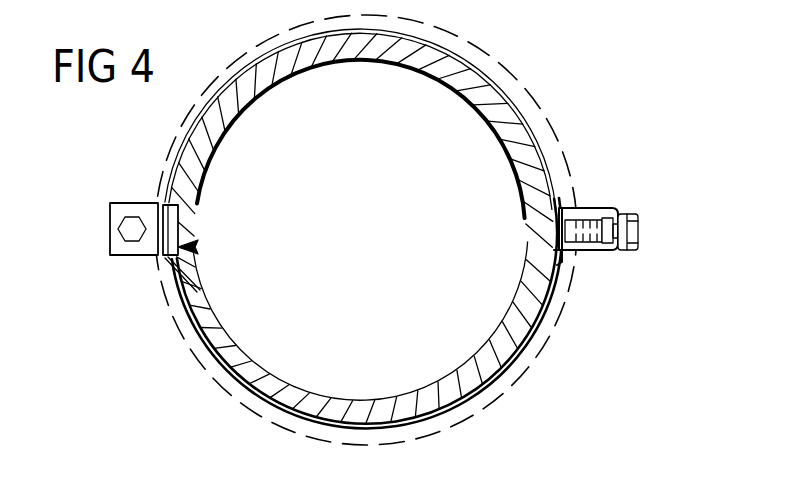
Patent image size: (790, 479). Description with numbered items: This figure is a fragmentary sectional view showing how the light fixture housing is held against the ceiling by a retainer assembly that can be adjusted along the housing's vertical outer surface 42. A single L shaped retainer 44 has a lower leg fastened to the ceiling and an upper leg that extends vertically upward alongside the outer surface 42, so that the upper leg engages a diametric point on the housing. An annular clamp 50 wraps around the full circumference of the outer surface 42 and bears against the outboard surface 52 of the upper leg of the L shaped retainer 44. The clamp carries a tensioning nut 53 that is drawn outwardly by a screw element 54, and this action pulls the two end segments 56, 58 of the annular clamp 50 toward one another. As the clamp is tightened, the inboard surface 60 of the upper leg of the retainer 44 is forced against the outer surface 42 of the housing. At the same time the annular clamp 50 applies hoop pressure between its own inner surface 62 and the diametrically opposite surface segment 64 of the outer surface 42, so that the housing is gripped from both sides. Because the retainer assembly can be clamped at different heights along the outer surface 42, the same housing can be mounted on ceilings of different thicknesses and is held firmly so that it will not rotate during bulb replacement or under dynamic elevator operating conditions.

The outer surface 42 is at (164, 282).
The L shaped retainer 44 is at (196, 247).
The annular clamp 50 is at (495, 77).
The outboard surface 52 is at (150, 262).
The tensioning nut 53 is at (617, 248).
The screw element 54 is at (637, 242).
The end segment 56 is at (553, 205).
The end segment 58 is at (560, 258).
The inboard surface 60 is at (190, 214).
The inner surface 62 is at (540, 149).
The surface segment 64 is at (546, 328).